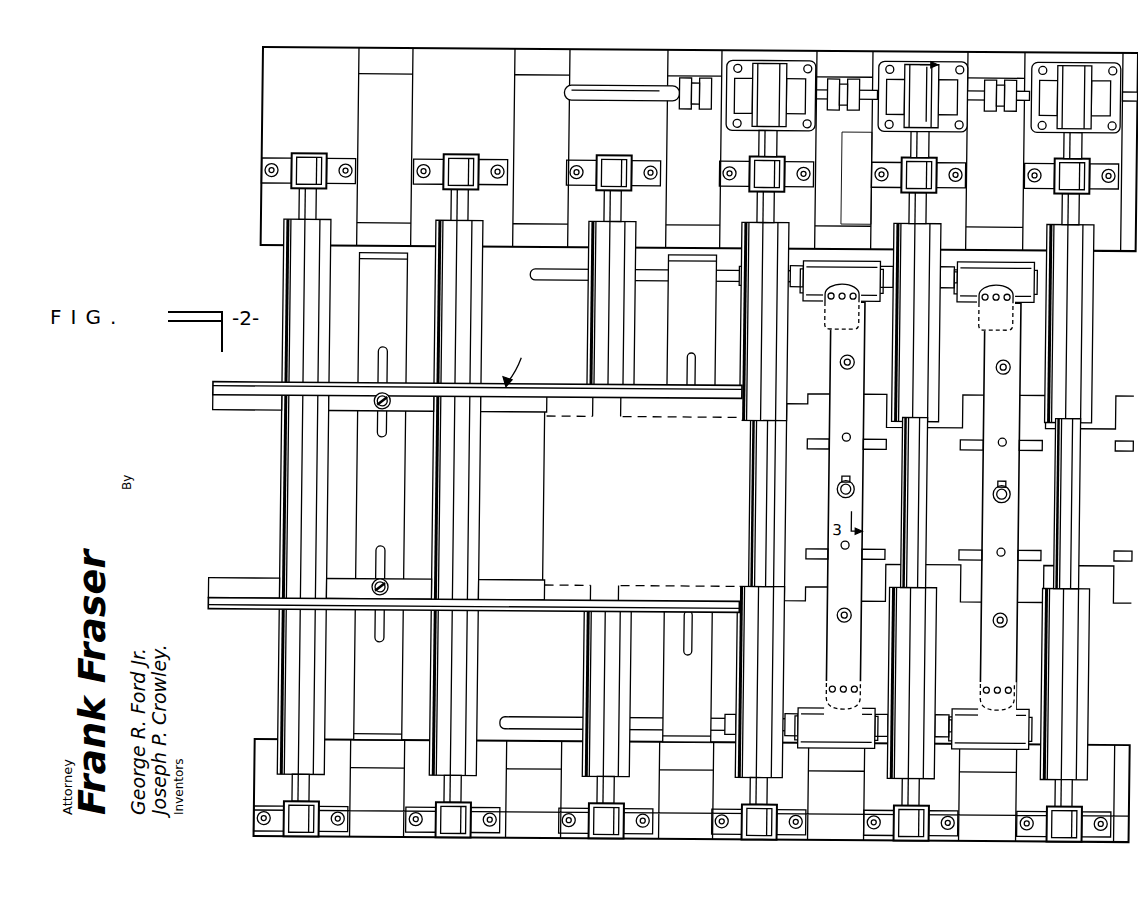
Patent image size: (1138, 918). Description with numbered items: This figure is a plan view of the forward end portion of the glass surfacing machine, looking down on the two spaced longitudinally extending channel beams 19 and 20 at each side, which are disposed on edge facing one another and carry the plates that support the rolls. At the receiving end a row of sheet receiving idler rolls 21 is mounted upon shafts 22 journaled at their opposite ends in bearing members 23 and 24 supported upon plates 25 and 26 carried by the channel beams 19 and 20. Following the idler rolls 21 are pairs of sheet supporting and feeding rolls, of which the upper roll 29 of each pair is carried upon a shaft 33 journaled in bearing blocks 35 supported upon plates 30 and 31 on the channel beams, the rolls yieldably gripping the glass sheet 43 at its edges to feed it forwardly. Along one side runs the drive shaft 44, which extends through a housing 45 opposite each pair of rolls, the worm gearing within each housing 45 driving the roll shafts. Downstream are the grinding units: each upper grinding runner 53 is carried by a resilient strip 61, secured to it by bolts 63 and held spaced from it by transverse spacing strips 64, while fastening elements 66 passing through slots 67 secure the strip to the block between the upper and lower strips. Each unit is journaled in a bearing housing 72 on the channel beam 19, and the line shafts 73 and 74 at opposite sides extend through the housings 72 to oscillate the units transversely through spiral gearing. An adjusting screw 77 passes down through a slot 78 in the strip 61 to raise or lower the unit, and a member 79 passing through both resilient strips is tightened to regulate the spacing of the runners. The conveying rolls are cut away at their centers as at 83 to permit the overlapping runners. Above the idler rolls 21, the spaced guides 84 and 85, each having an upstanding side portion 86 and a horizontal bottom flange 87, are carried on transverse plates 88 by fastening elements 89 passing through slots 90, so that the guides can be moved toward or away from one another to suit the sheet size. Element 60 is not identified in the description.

The channel beam 19 is at (383, 228).
The channel beam 20 is at (377, 62).
The sheet receiving idler roll 21 is at (298, 453).
The shaft 22 is at (297, 195).
The bearing member 23 is at (308, 165).
The bearing member 24 is at (298, 815).
The plate 25 is at (433, 124).
The plate 26 is at (420, 784).
The upper roll 29 is at (928, 380).
The plate 30 is at (743, 146).
The plate 31 is at (880, 792).
The shaft 33 is at (913, 205).
The bearing block 35 is at (1067, 180).
The glass sheet 43 is at (566, 491).
The drive shaft 44 is at (603, 89).
The housing 45 is at (1073, 110).
The grinding runner 53 is at (800, 491).
The pivot ring 60 is at (848, 497).
The resilient strip 61 is at (856, 497).
The bolt 63 is at (853, 440).
The spacing strip 64 is at (816, 438).
The fastening element 66 is at (858, 312).
The slot 67 is at (828, 289).
The bearing housing 72 is at (965, 722).
The line shaft 73 is at (571, 279).
The line shaft 74 is at (566, 720).
The adjusting screw 77 is at (1003, 295).
The slot 78 is at (997, 280).
The member 79 is at (838, 615).
The cut away portion 83 is at (752, 420).
The guide 84 is at (520, 361).
The guide 85 is at (503, 616).
The upstanding side portion 86 is at (548, 387).
The horizontal bottom flange 87 is at (507, 406).
The transverse plate 88 is at (372, 520).
The fastening element 89 is at (388, 586).
The slot 90 is at (377, 640).